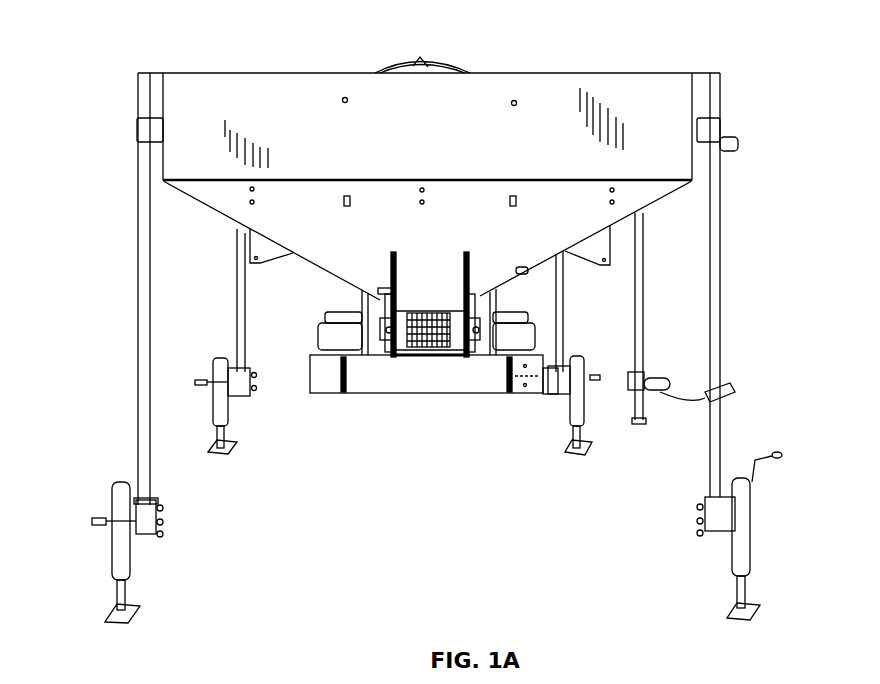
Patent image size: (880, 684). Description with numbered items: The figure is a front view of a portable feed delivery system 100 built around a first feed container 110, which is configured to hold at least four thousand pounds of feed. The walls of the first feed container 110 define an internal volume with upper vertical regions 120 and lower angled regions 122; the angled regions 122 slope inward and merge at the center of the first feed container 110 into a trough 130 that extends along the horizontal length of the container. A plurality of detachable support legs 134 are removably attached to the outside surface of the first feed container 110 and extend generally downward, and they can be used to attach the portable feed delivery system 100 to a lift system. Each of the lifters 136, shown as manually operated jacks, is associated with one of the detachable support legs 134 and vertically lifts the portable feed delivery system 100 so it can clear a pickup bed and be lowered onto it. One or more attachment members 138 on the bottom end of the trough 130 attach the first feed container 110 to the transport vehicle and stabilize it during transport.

The portable feed delivery system 100 is at (255, 49).
The first feed container 110 is at (514, 102).
The vertical regions 120 is at (673, 122).
The angled regions 122 is at (557, 220).
The trough 130 is at (480, 304).
The detachable support legs 134 is at (148, 392).
The lifters 136 is at (122, 545).
The attachment members 138 is at (592, 385).